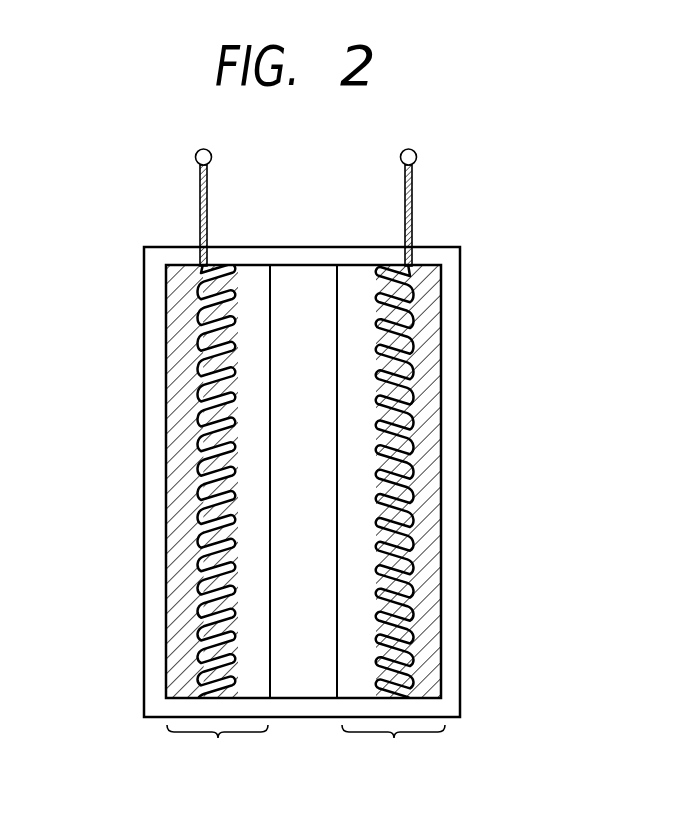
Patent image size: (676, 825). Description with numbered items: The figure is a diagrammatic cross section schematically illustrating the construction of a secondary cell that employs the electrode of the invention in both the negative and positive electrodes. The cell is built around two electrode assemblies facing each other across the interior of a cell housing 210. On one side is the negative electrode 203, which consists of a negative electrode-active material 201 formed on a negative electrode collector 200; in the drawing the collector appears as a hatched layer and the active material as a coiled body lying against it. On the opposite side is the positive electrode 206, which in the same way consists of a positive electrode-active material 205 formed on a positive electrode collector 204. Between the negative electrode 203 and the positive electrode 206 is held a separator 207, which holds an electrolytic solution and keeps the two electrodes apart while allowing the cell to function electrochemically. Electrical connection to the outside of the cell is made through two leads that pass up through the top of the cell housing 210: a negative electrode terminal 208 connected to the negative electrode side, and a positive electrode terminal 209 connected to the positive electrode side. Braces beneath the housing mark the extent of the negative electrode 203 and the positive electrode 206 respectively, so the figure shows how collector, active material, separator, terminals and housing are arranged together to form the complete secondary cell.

The negative electrode collector 200 is at (187, 637).
The negative electrode-active material 201 is at (253, 583).
The negative electrode 203 is at (217, 751).
The positive electrode collector 204 is at (440, 558).
The positive electrode-active material 205 is at (353, 538).
The positive electrode 206 is at (393, 750).
The separator 207 is at (318, 481).
The negative electrode terminal 208 is at (212, 157).
The positive electrode terminal 209 is at (417, 157).
The cell housing 210 is at (450, 649).